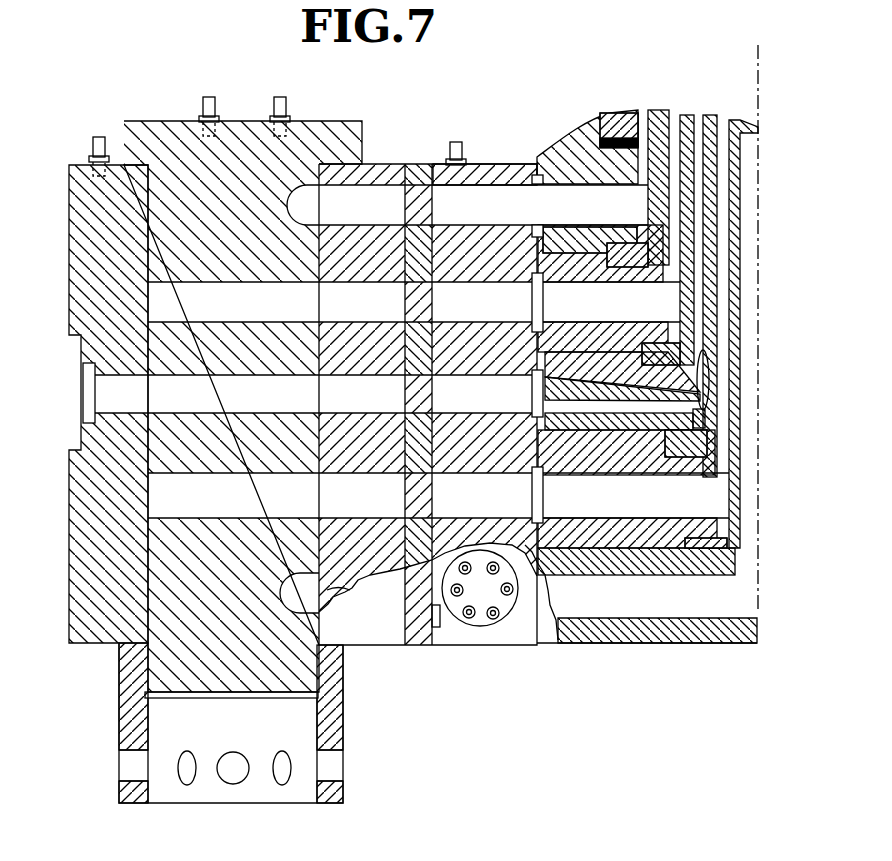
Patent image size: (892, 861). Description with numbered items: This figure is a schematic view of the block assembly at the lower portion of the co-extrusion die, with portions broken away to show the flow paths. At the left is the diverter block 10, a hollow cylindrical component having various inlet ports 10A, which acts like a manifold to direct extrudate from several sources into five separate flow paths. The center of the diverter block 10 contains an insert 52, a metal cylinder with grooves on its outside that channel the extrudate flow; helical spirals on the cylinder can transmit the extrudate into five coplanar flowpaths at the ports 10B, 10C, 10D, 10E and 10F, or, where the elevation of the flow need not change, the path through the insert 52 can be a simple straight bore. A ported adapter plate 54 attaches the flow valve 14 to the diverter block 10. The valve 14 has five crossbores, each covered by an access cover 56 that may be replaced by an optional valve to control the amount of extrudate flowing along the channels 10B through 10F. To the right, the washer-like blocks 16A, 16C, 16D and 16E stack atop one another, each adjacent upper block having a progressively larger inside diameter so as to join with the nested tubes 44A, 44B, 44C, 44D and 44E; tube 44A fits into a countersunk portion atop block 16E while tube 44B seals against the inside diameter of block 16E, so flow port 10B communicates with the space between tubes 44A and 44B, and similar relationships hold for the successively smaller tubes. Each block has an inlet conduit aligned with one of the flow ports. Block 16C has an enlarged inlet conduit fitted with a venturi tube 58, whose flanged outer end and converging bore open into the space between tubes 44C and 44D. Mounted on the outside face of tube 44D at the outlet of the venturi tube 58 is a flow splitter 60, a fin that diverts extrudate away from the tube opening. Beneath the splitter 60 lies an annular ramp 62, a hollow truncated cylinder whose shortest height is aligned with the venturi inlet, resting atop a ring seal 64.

The diverter block 10 is at (69, 195).
The inlet ports 10A is at (115, 392).
The port 10B is at (395, 218).
The port 10C is at (395, 311).
The port 10D is at (395, 406).
The port 10E is at (395, 501).
The port 10F is at (375, 595).
The flow valve 14 is at (487, 168).
The block 16A is at (617, 633).
The block 16C is at (690, 475).
The block 16D is at (650, 285).
The block 16E is at (663, 308).
The tube 44A is at (616, 118).
The tube 44B is at (657, 118).
The tube 44C is at (684, 124).
The tube 44D is at (708, 122).
The tube 44E is at (737, 155).
The insert 52 is at (150, 121).
The ported adapter plate 54 is at (420, 628).
The access cover 56 is at (508, 620).
The venturi tube 58 is at (618, 420).
The flow splitter 60 is at (708, 375).
The annular ramp 62 is at (706, 418).
The ring seal 64 is at (707, 452).